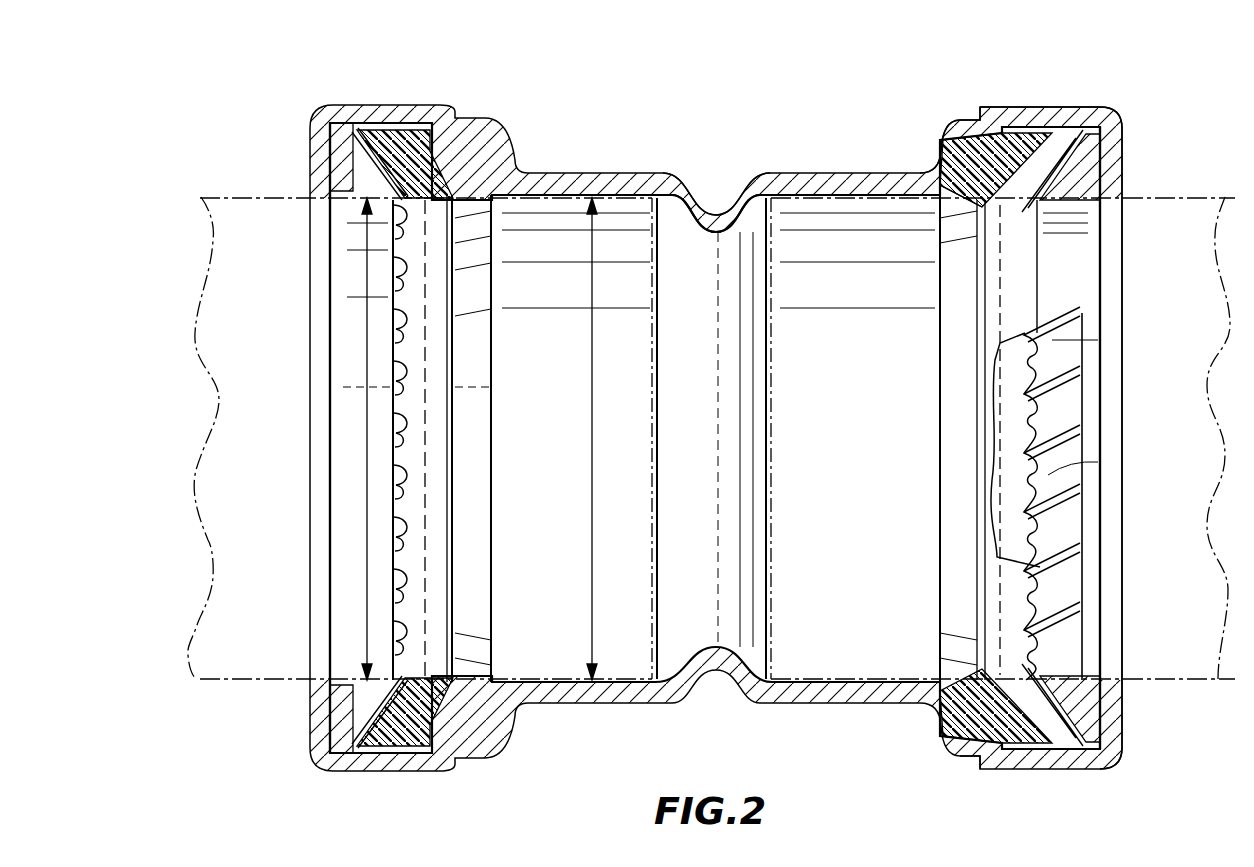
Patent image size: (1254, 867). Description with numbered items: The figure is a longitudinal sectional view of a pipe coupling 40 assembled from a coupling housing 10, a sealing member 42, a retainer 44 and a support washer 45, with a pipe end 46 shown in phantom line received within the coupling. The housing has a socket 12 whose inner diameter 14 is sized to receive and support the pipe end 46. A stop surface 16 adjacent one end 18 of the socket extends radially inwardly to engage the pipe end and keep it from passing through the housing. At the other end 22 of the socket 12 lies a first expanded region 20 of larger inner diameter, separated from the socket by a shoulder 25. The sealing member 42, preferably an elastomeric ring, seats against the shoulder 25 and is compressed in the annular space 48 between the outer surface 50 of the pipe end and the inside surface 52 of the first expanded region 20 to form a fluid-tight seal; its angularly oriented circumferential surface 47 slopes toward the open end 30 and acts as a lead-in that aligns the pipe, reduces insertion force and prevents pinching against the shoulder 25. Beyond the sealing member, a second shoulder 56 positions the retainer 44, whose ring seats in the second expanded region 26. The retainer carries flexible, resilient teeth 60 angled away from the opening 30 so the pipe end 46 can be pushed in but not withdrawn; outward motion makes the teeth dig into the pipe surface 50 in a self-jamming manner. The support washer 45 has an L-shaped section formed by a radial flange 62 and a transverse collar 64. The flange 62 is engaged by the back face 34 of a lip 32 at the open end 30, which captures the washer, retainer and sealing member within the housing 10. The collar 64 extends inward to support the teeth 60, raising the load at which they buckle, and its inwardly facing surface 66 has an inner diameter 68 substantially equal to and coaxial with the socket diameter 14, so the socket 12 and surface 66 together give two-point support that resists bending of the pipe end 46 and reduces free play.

The coupling housing 10 is at (632, 171).
The socket 12 is at (533, 381).
The socket inner diameter 14 is at (588, 431).
The stop surface 16 is at (750, 590).
The one end of the socket 18 is at (771, 171).
The first expanded region 20 is at (960, 119).
The other end of the socket 22 is at (914, 168).
The shoulder 25 is at (946, 205).
The second expanded region 26 is at (1053, 107).
The open end 30 is at (1118, 433).
The lip 32 is at (1124, 128).
The back face 34 is at (1084, 128).
The pipe coupling 40 is at (800, 92).
The sealing member 42 is at (937, 148).
The retainer 44 is at (1062, 341).
The support washer 45 is at (1088, 241).
The pipe end 46 is at (243, 658).
The angularly oriented circumferential surface 47 is at (1000, 305).
The annular space 48 is at (1002, 690).
The outer surface of pipe end 50 is at (1142, 693).
The inside surface of the first expanded region 52 is at (940, 736).
The second shoulder 56 is at (990, 135).
The teeth 60 is at (1082, 456).
The radial flange 62 is at (330, 735).
The collar 64 is at (368, 196).
The inwardly facing surface 66 is at (348, 288).
The inner diameter of collar surface 68 is at (390, 441).